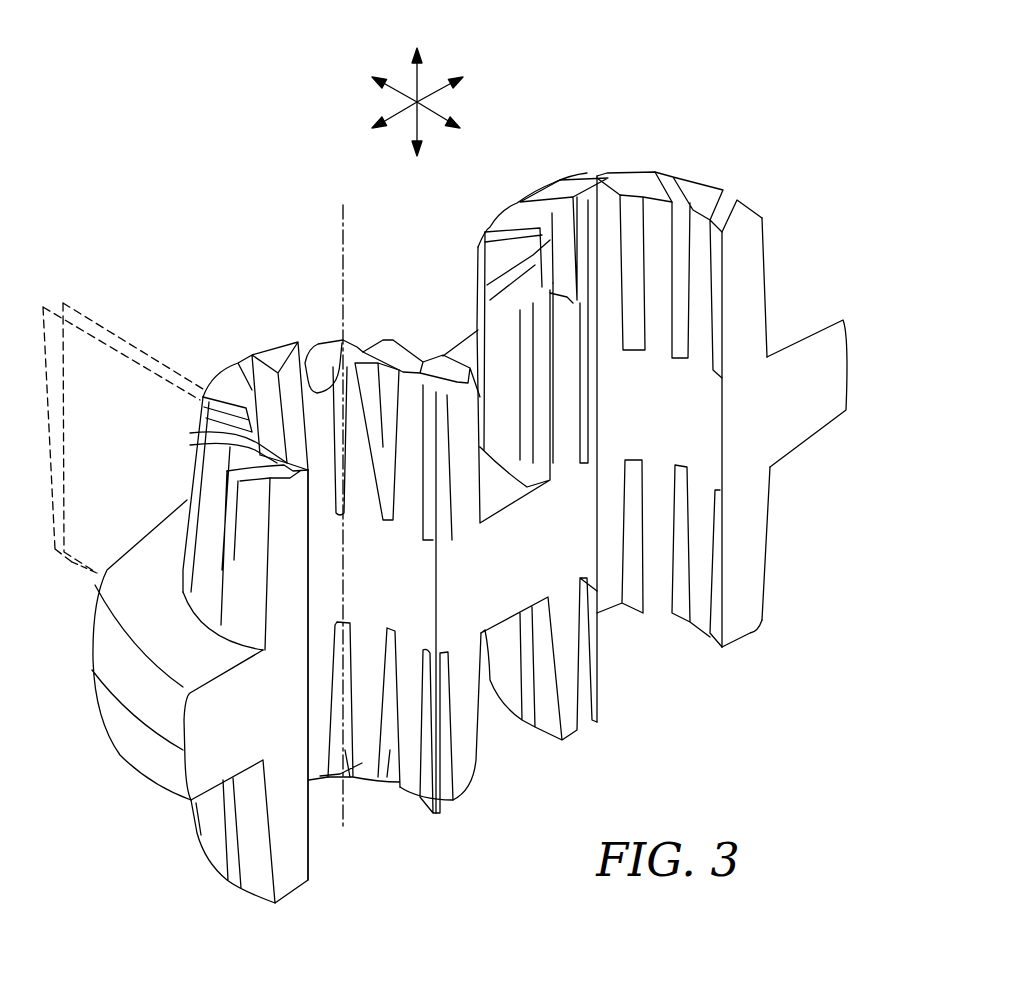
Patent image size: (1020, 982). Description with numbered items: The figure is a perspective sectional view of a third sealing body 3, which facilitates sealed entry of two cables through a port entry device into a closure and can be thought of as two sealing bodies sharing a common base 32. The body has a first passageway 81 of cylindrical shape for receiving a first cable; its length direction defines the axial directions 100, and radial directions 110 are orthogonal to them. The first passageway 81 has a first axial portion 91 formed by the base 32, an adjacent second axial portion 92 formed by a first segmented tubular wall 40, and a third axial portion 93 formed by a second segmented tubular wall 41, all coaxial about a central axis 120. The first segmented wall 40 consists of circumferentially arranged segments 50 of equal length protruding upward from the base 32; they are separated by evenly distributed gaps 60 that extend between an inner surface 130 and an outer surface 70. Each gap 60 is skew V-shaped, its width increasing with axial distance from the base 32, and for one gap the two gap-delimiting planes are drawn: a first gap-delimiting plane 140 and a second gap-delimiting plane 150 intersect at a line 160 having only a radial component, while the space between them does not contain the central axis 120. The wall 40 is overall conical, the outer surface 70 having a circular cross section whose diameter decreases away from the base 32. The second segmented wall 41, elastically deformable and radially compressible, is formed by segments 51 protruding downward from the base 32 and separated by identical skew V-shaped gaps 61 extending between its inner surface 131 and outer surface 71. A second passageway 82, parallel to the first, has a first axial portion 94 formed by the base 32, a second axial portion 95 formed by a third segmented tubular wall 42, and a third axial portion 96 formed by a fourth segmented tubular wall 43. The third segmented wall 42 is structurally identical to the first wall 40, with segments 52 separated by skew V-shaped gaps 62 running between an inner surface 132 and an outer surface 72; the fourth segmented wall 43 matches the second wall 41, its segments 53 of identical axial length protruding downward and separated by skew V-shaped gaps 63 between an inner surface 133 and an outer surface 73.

The third sealing body 3 is at (210, 211).
The base 32 is at (133, 627).
The first segmented tubular wall 40 is at (287, 513).
The second segmented tubular wall 41 is at (313, 857).
The third segmented tubular wall 42 is at (745, 248).
The fourth segmented tubular wall 43 is at (737, 597).
The segments 50 is at (320, 348).
The segments 51 is at (367, 710).
The segments 52 is at (697, 193).
The segments 53 is at (607, 557).
The gaps 60 is at (400, 343).
The skew V-shaped gaps 61 is at (390, 750).
The skew V-shaped gaps 62 is at (597, 173).
The skew V-shaped gaps 63 is at (705, 598).
The outer surface 70 is at (203, 493).
The outer surface 71 is at (210, 860).
The outer surface 72 is at (767, 323).
The outer surface 73 is at (770, 493).
The first passageway 81 is at (422, 850).
The second passageway 82 is at (718, 700).
The first axial portion 91 is at (377, 587).
The second axial portion 92 is at (364, 471).
The third axial portion 93 is at (364, 677).
The first axial portion 94 is at (632, 416).
The second axial portion 95 is at (632, 279).
The third axial portion 96 is at (632, 506).
The axial directions 100 is at (419, 72).
The radial directions 110 is at (443, 112).
The central axis 120 is at (345, 207).
The inner surface 130 is at (317, 395).
The inner surface 131 is at (408, 740).
The inner surface 132 is at (697, 283).
The inner surface 133 is at (700, 530).
The first gap-delimiting plane 140 is at (133, 343).
The second gap-delimiting plane 150 is at (92, 337).
The line 160 is at (77, 563).